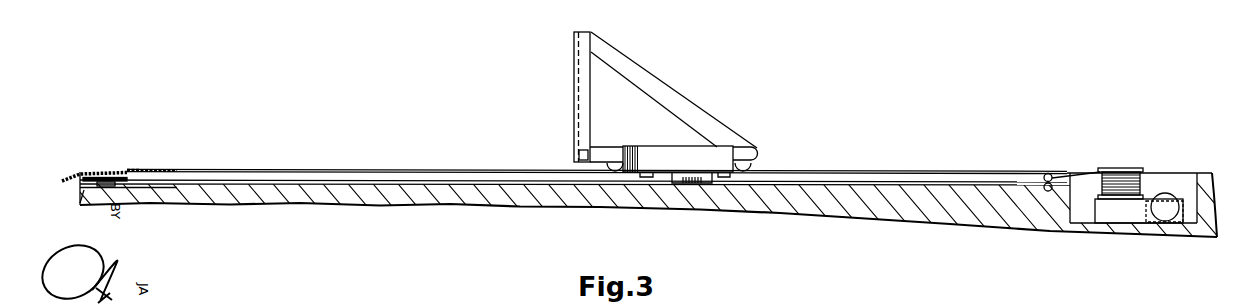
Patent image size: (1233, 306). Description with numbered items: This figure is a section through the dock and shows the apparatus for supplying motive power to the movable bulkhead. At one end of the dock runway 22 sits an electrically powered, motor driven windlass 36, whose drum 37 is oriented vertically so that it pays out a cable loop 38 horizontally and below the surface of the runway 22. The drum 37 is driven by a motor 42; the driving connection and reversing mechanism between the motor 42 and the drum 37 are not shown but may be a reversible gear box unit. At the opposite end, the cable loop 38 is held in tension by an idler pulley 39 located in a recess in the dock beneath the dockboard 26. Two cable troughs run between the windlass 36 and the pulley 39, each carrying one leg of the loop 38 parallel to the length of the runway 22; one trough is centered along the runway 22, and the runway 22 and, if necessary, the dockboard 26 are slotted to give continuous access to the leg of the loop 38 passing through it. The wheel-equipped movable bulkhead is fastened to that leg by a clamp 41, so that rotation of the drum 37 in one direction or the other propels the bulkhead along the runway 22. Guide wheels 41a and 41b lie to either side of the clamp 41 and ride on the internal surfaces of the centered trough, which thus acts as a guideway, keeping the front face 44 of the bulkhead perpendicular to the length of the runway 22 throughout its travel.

The dock runway 22 is at (399, 169).
The dockboard 26 is at (72, 175).
The windlass 36 is at (1143, 161).
The drum 37 is at (1125, 168).
The cable loop 38 is at (307, 180).
The idler pulley 39 is at (83, 203).
The clamp 41 is at (690, 183).
The guide wheel 41a is at (650, 177).
The guide wheel 41b is at (725, 177).
The motor 42 is at (1167, 194).
The front face 44 is at (574, 82).